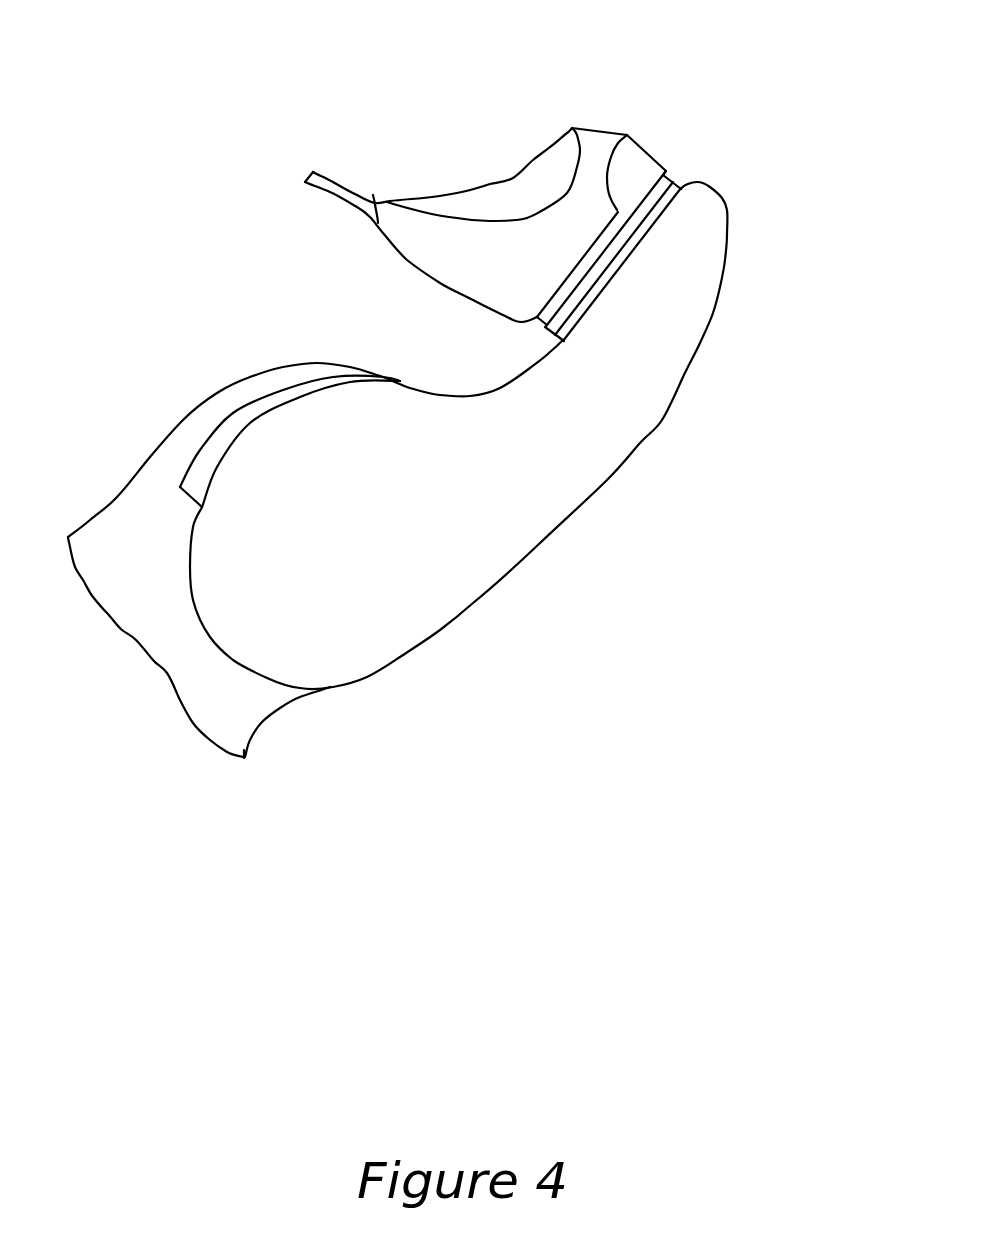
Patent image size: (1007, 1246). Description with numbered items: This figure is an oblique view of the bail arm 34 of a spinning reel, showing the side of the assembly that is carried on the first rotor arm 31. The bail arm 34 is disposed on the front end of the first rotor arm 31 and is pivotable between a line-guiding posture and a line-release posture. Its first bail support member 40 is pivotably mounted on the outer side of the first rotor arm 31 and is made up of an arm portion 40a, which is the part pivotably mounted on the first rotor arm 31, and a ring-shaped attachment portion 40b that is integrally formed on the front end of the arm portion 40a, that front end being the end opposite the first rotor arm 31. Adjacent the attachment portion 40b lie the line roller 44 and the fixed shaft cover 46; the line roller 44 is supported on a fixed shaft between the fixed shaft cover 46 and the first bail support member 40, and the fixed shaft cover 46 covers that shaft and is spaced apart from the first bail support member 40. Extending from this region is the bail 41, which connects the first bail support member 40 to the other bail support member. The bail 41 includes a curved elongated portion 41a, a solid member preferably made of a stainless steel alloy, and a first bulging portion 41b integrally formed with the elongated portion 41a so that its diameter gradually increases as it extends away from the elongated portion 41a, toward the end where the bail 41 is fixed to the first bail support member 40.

The first rotor arm 31 is at (263, 705).
The bail arm 34 is at (741, 231).
The first bail support member 40 is at (563, 552).
The arm portion 40a is at (612, 447).
The attachment portion 40b is at (700, 193).
The bail 41 is at (331, 188).
The elongated portion 41a is at (314, 182).
The first bulging portion 41b is at (375, 200).
The line roller 44 is at (673, 177).
The fixed shaft cover 46 is at (568, 137).